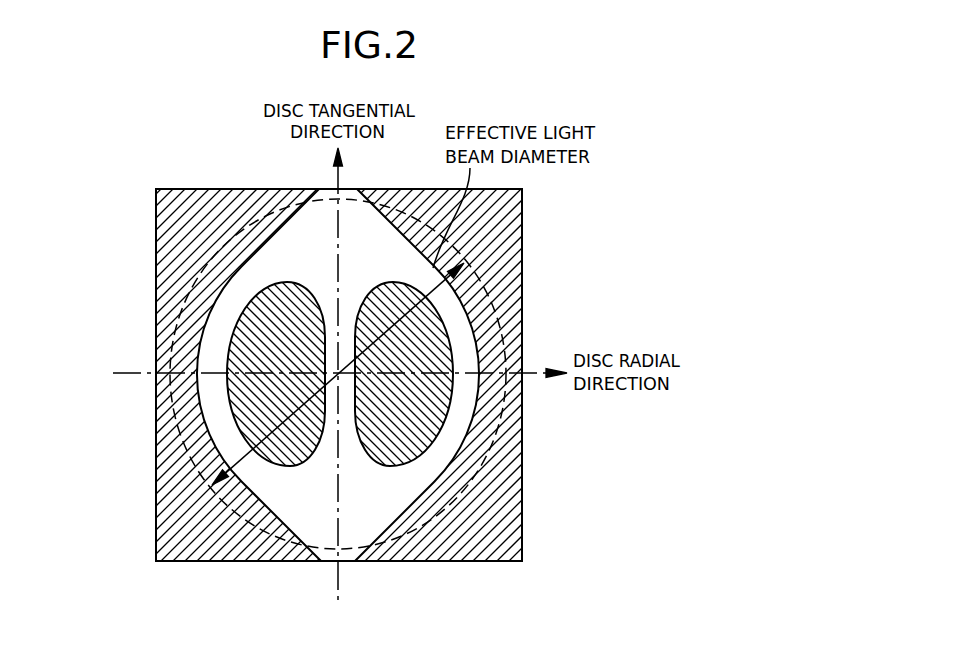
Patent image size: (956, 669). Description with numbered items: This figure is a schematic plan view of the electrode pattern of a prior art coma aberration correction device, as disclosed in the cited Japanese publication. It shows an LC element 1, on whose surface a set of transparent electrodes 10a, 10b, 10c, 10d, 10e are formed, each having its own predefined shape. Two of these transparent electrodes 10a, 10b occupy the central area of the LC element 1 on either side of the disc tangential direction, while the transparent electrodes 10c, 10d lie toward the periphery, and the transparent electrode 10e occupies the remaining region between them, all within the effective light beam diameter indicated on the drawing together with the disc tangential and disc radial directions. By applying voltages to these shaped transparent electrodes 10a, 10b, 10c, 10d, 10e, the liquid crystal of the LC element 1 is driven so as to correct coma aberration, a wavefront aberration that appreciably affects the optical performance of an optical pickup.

The LC element 1 is at (522, 215).
The transparent electrode 10a is at (283, 350).
The transparent electrode 10b is at (433, 398).
The transparent electrode 10c is at (177, 503).
The transparent electrode 10d is at (505, 500).
The transparent electrode 10e is at (318, 467).